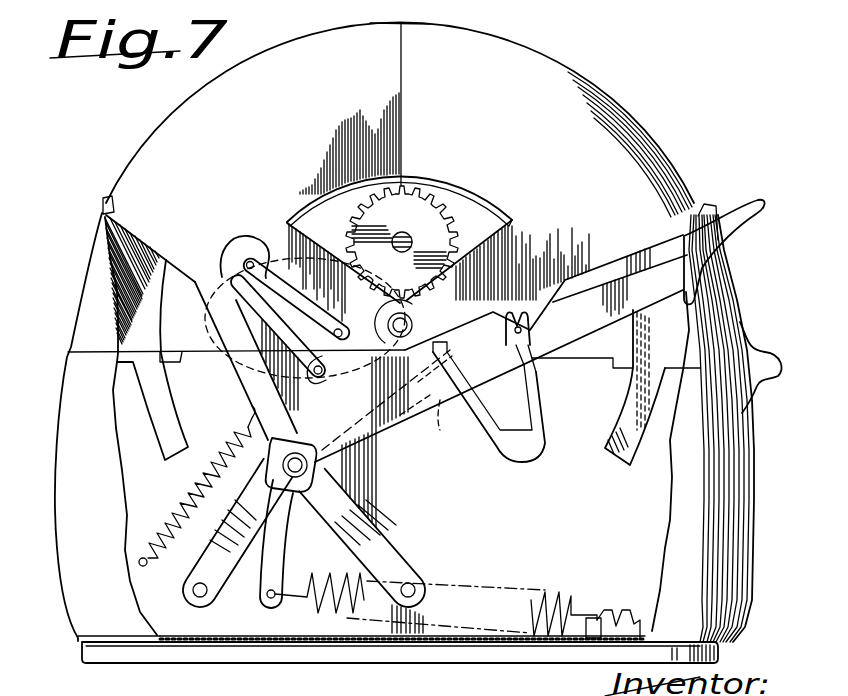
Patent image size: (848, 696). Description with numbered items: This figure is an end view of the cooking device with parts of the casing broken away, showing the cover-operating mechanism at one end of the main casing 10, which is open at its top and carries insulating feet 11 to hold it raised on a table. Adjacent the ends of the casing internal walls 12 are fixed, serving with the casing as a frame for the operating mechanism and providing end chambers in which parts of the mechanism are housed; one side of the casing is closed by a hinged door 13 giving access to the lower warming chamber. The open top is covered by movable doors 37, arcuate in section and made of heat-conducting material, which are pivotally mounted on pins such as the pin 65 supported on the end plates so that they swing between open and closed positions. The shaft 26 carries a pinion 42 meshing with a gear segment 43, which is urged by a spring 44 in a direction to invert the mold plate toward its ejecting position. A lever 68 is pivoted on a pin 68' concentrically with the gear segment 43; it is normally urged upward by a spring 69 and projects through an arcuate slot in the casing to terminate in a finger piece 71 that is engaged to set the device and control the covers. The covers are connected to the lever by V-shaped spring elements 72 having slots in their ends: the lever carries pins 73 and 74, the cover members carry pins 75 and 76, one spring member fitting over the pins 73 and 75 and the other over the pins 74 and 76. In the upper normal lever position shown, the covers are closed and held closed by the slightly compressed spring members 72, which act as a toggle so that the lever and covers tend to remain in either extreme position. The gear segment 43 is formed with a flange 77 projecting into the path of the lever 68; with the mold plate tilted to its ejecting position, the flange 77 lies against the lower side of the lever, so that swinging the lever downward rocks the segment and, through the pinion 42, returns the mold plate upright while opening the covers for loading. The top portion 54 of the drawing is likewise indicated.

The main casing 10 is at (62, 430).
The insulating feet 11 is at (230, 655).
The internal walls 12 is at (248, 612).
The hinged door 13 is at (748, 448).
The shaft 26 is at (403, 233).
The movable doors 37 is at (178, 120).
The pinion 42 is at (432, 188).
The gear segment 43 is at (242, 376).
The spring 44 is at (548, 598).
The dome top 54 is at (337, 2).
The pin 65 is at (440, 302).
The lever 68 is at (501, 358).
The pin 68' is at (303, 473).
The spring 69 is at (192, 489).
The finger piece 71 is at (737, 227).
The V-shaped spring elements 72 is at (247, 248).
The pin 73 is at (426, 393).
The pin 74 is at (328, 378).
The pin 75 is at (517, 318).
The pin 76 is at (334, 333).
The flange 77 is at (438, 412).